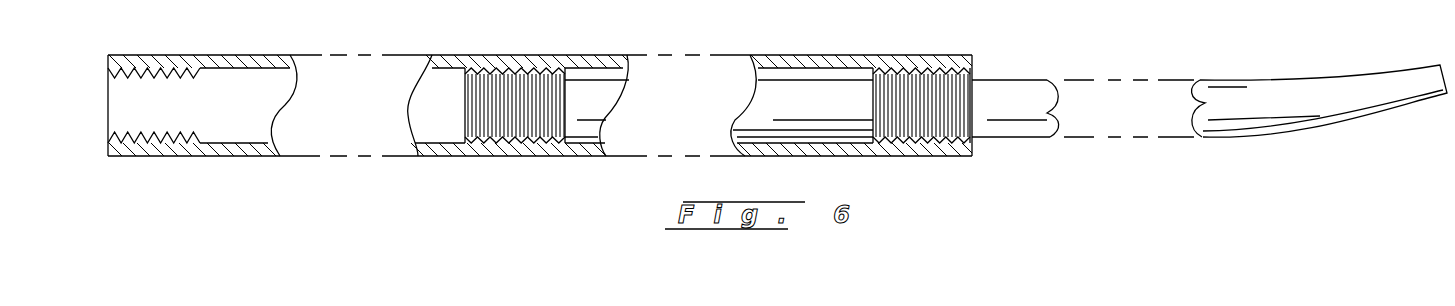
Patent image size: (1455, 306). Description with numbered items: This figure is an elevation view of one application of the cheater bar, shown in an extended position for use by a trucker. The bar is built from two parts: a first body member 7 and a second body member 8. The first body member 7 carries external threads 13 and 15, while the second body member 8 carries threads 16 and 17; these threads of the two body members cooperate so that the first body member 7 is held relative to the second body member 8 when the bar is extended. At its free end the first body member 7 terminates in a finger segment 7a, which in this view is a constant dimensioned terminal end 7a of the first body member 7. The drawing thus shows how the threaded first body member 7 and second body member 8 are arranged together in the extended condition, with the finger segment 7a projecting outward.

The first body member 7 is at (768, 100).
The finger segment 7a is at (1377, 92).
The second body member 8 is at (235, 150).
The external thread 13 is at (495, 93).
The external thread 15 is at (952, 108).
The thread 16 is at (523, 65).
The thread 17 is at (921, 143).